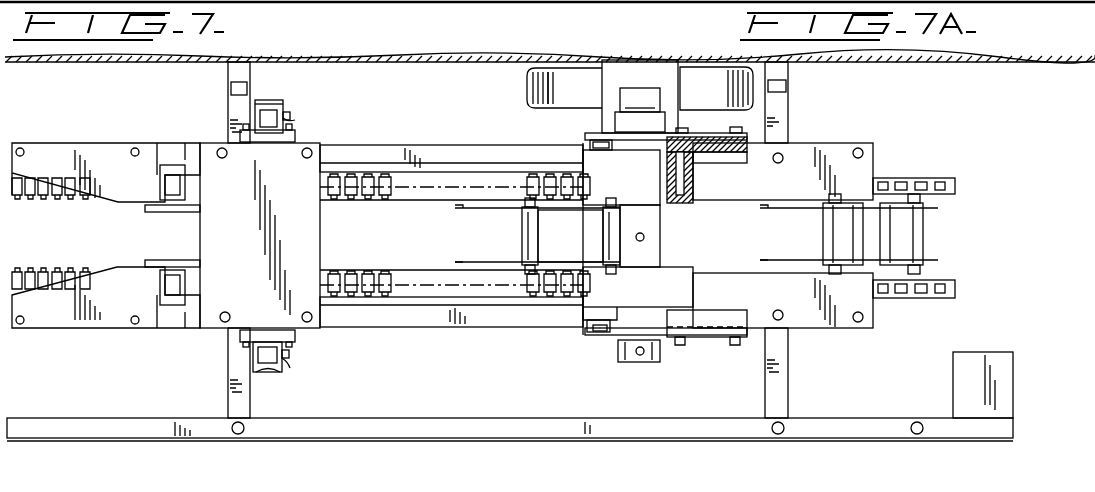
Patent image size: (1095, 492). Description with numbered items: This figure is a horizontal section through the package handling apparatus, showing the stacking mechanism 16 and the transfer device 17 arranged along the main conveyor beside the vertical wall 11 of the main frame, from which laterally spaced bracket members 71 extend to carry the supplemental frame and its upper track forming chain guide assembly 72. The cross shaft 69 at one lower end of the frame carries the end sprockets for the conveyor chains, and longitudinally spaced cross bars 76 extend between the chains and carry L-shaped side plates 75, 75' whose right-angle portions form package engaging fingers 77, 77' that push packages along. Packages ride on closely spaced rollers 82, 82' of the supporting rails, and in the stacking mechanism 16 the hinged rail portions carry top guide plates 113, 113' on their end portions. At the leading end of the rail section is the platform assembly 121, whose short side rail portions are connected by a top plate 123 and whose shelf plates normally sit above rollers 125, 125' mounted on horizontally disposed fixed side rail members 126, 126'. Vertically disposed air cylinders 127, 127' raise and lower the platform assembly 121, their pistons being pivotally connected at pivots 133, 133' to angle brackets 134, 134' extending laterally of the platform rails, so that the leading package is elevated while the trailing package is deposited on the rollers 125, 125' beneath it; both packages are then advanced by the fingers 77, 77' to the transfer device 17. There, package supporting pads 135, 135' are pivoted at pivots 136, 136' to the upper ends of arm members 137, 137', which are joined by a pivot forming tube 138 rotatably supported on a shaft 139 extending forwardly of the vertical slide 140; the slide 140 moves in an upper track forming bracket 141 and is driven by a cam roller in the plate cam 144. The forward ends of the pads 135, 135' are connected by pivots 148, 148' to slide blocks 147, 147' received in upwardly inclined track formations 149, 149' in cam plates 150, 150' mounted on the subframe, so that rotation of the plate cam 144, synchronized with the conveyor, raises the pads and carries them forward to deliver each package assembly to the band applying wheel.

The vertical wall 11 is at (922, 63).
The stacking mechanism 16 is at (106, 224).
The transfer device 17 is at (799, 336).
The cross shaft 69 is at (915, 247).
The bracket member 71 is at (240, 108).
The upper track forming chain guide assembly 72 is at (458, 432).
The L-shaped side plate 75 is at (696, 254).
The L-shaped side plate 75' is at (696, 220).
The cross bar 76 is at (526, 230).
The package engaging finger 77 is at (596, 254).
The package engaging finger 77' is at (595, 218).
The roller 82 is at (51, 266).
The roller 82' is at (51, 203).
The top guide plate 113 is at (106, 314).
The top guide plate 113' is at (106, 157).
The platform assembly 121 is at (305, 297).
The top plate 123 is at (320, 152).
The roller 125 is at (455, 269).
The roller 125' is at (455, 201).
The fixed side rail member 126 is at (451, 315).
The fixed side rail member 126' is at (451, 153).
The air cylinder 127 is at (267, 376).
The air cylinder 127' is at (279, 103).
The pivot 133 is at (303, 380).
The pivot 133' is at (334, 100).
The angle bracket 134 is at (308, 365).
The angle bracket 134' is at (300, 108).
The package supporting pad 135 is at (648, 282).
The package supporting pad 135' is at (677, 210).
The pivot 136 is at (605, 308).
The pivot 136' is at (621, 172).
The arm member 137 is at (586, 348).
The arm member 137' is at (588, 128).
The pivot forming tube 138 is at (648, 237).
The shaft 139 is at (650, 362).
The slide 140 is at (642, 96).
The upper track forming bracket 141 is at (612, 78).
The plate cam 144 is at (550, 95).
The slide block 147 is at (680, 362).
The slide block 147' is at (706, 152).
The pivot 148 is at (707, 315).
The pivot 148' is at (686, 170).
The upwardly inclined track formation 149 is at (721, 354).
The upwardly inclined track formation 149' is at (723, 169).
The cam plate 150 is at (758, 302).
The cam plate 150' is at (725, 119).